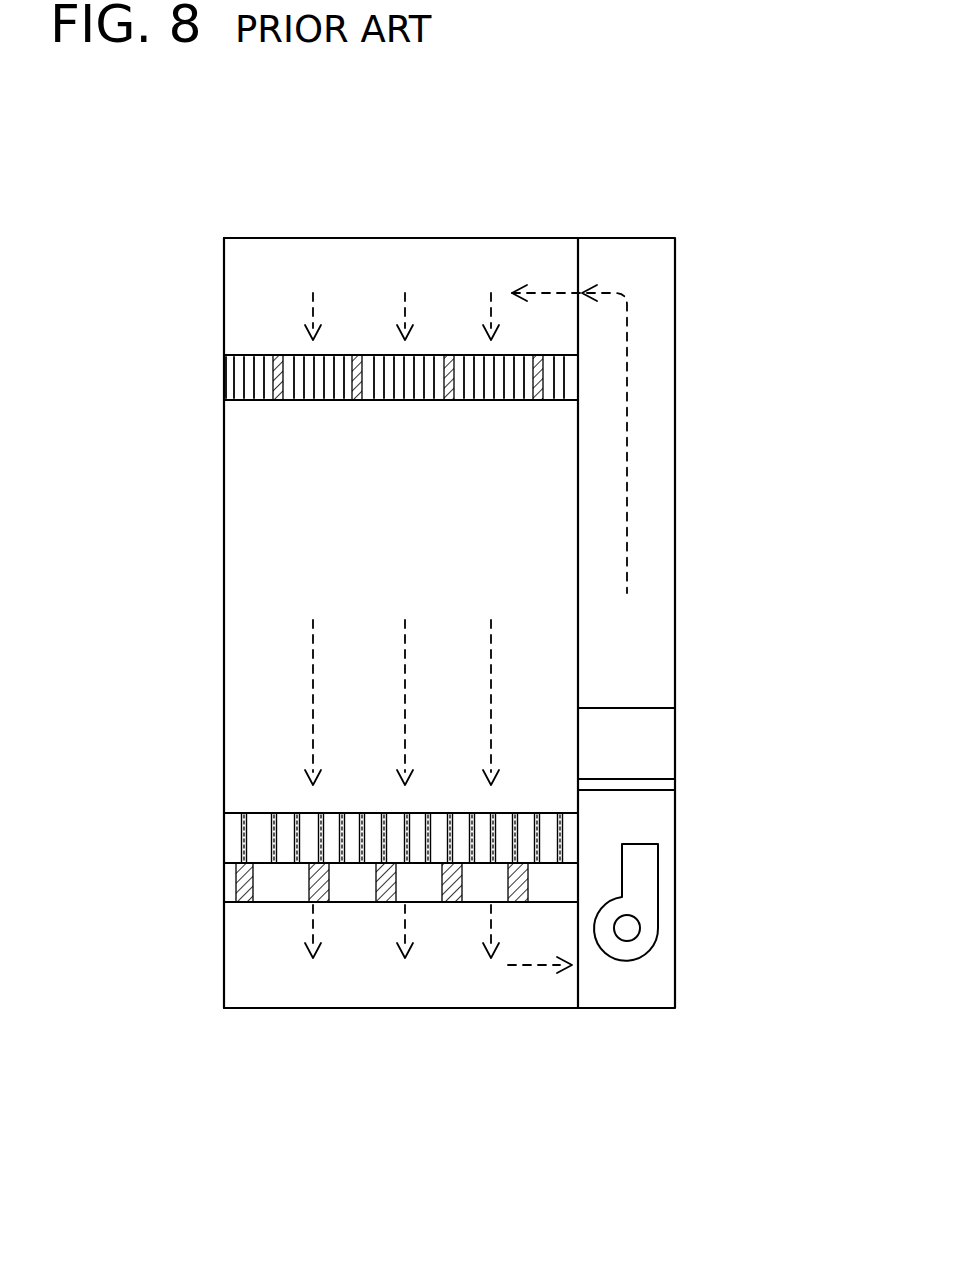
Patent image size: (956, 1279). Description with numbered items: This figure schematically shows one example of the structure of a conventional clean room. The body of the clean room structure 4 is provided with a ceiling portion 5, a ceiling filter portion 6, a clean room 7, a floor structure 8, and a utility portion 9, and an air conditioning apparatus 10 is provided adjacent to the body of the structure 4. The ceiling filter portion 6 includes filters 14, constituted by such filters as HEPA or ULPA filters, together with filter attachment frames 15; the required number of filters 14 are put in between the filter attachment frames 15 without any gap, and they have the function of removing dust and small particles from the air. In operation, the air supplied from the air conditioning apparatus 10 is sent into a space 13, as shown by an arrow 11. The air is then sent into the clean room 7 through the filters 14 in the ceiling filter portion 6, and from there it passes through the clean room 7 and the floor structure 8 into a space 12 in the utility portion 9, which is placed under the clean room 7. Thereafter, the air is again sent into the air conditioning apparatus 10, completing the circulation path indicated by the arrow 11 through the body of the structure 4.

The body of clean room structure 4 is at (140, 283).
The ceiling portion 5 is at (290, 238).
The ceiling filter portion 6 is at (312, 440).
The clean room 7 is at (262, 664).
The floor structure 8 is at (224, 836).
The utility portion 9 is at (232, 942).
The air conditioning apparatus 10 is at (658, 860).
The arrow 11 is at (493, 290).
The space 12 is at (355, 955).
The space 13 is at (432, 265).
The filters 14 is at (292, 402).
The filter attachment frames 15 is at (444, 400).